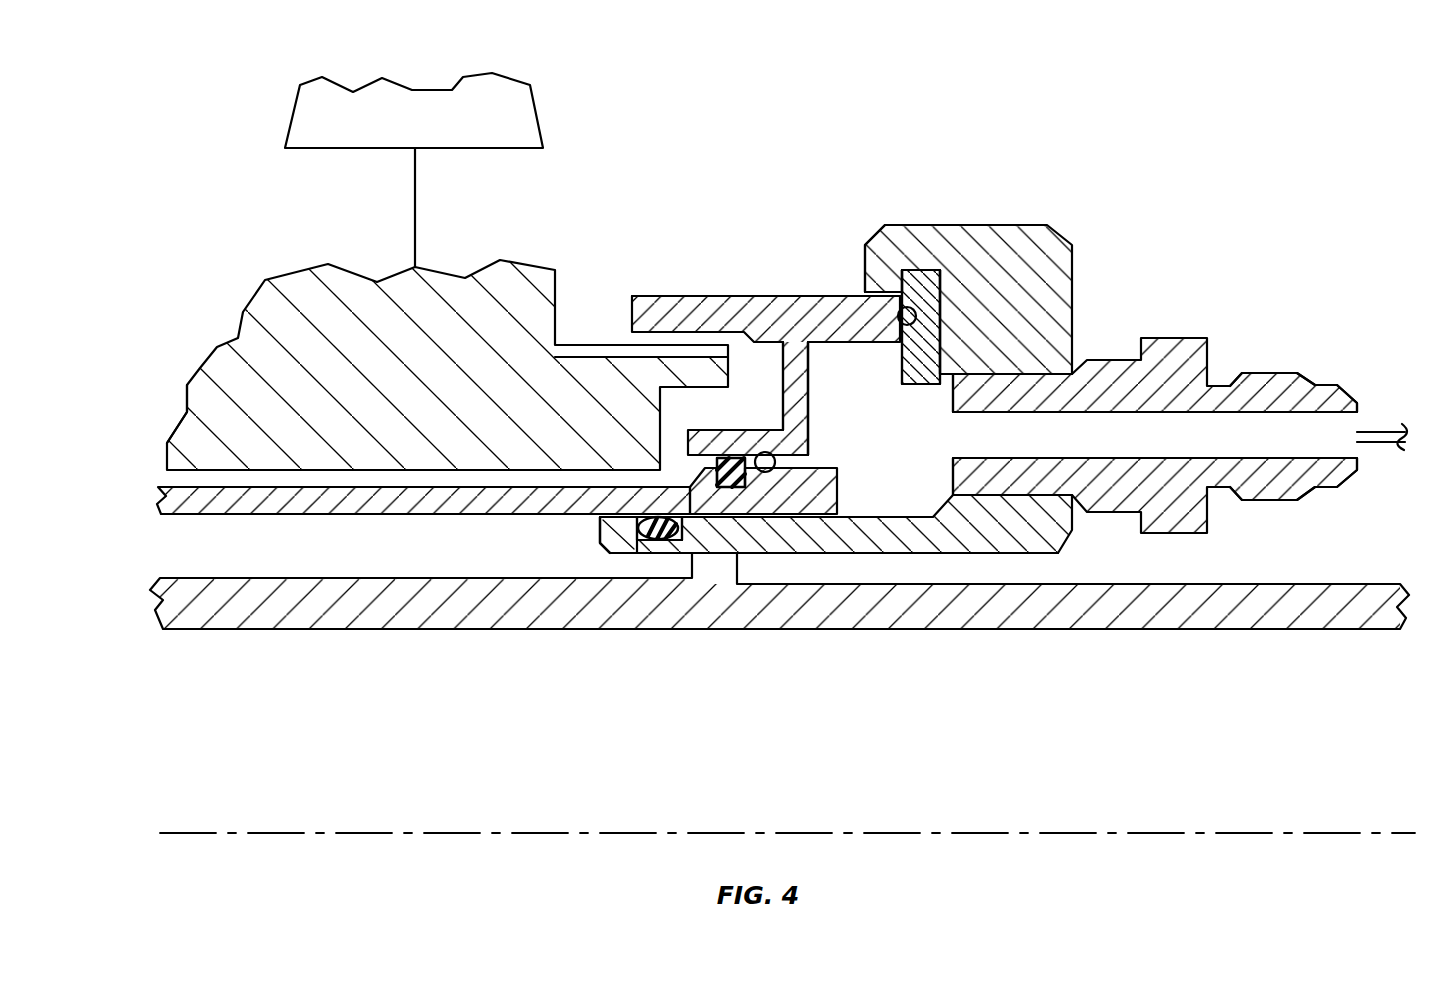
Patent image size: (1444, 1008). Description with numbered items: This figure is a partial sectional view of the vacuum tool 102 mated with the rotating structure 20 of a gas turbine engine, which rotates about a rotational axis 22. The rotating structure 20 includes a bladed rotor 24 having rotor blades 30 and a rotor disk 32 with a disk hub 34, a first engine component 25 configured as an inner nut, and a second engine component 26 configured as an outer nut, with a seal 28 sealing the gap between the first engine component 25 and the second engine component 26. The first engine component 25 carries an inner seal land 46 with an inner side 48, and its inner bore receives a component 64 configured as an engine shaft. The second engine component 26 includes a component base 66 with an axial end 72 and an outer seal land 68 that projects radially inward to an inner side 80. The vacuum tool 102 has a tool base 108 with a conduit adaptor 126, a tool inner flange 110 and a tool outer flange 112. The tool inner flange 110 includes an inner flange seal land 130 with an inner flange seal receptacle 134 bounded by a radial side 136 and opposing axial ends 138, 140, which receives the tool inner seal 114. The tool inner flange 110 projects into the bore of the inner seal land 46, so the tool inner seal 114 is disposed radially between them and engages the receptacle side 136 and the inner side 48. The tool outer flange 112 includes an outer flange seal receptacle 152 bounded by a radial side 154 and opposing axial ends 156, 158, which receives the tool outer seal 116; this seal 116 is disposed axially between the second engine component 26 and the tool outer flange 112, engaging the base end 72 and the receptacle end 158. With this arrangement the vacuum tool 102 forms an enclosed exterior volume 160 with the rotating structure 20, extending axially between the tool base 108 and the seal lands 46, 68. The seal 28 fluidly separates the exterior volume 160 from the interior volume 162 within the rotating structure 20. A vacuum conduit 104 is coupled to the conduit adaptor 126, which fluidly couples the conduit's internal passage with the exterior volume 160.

The rotating structure 20 is at (173, 83).
The rotational axis 22 is at (178, 830).
The bladed rotor 24 is at (214, 343).
The first engine component 25 is at (150, 500).
The second engine component 26 is at (726, 286).
The seal 28 is at (727, 494).
The rotor blades 30 is at (546, 108).
The rotor disk 32 is at (120, 408).
The disk hub 34 is at (183, 408).
The inner seal land 46 is at (846, 494).
The inner side 48 is at (780, 518).
The component 64 is at (152, 603).
The component base 66 is at (668, 296).
The outer seal land 68 is at (815, 398).
The axial end 72 is at (897, 308).
The inner side 80 is at (766, 452).
The vacuum tool 102 is at (1093, 229).
The vacuum conduit 104 is at (1383, 432).
The tool base 108 is at (1088, 315).
The tool inner flange 110 is at (862, 558).
The tool outer flange 112 is at (877, 217).
The tool inner seal 114 is at (645, 541).
The tool outer seal 116 is at (924, 265).
The conduit adaptor 126 is at (1291, 354).
The inner flange seal land 130 is at (596, 555).
The inner flange seal receptacle 134 is at (632, 553).
The radial side 136 is at (661, 555).
The axial end 138 is at (603, 525).
The axial end 140 is at (683, 538).
The outer flange seal receptacle 152 is at (946, 265).
The radial side 154 is at (905, 278).
The axial end 156 is at (900, 285).
The axial end 158 is at (943, 288).
The exterior volume 160 is at (931, 465).
The interior volume 162 is at (550, 478).